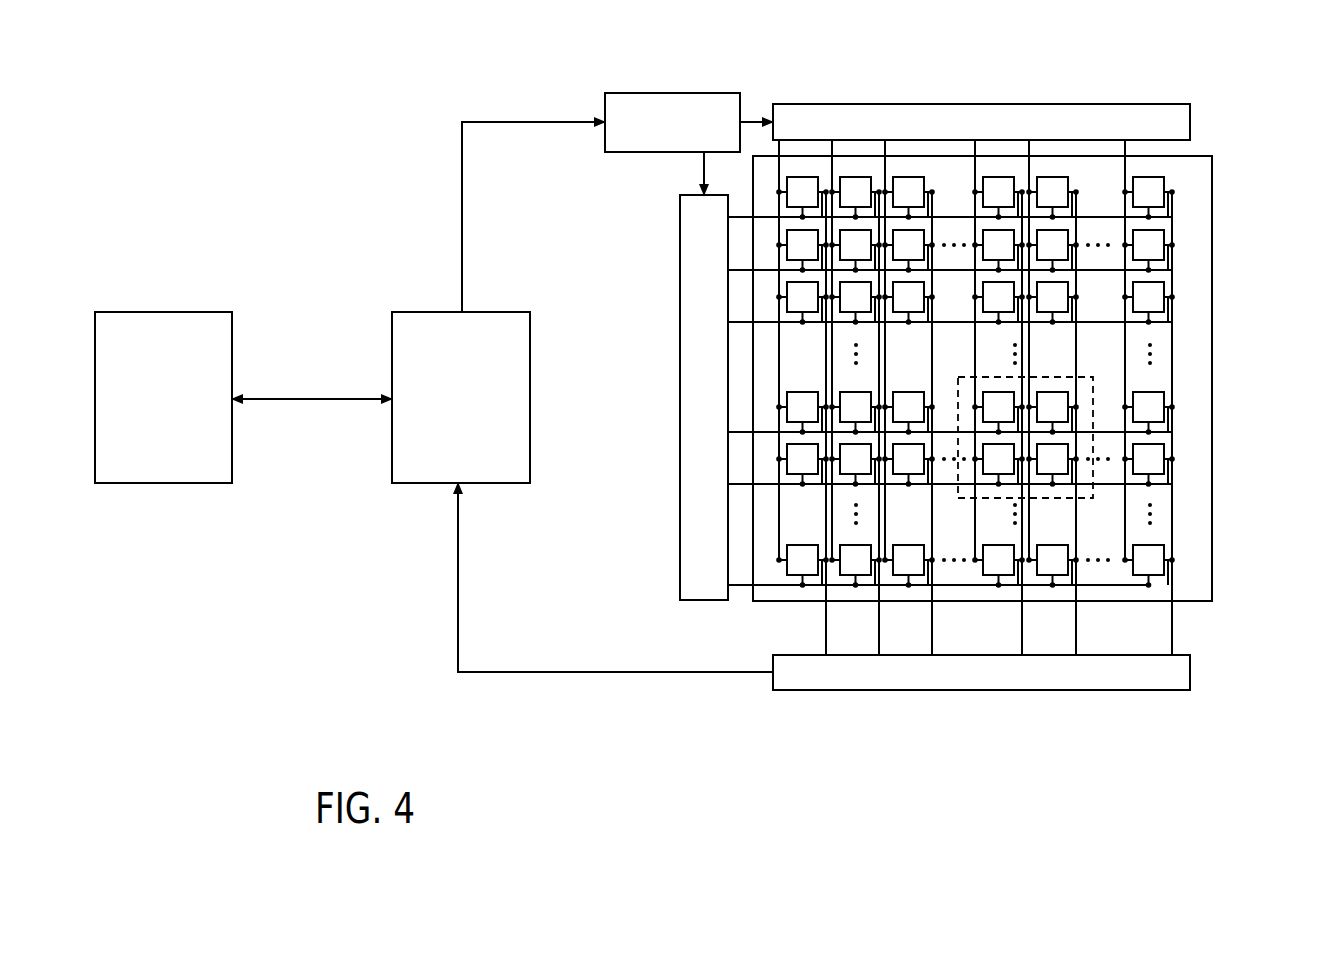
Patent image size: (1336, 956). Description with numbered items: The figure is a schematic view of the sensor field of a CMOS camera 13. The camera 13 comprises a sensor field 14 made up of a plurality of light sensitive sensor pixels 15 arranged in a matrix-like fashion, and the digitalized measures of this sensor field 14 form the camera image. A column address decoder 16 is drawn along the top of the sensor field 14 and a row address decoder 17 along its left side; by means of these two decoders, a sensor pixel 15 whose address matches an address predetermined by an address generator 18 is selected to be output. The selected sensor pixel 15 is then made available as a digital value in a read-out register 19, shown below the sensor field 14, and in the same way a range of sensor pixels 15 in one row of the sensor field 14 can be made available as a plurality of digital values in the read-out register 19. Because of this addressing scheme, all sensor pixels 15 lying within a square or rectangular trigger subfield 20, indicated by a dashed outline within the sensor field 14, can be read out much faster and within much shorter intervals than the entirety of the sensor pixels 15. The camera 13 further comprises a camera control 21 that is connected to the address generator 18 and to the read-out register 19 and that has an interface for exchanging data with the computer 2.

The computer 2 is at (153, 416).
The camera 13 is at (368, 94).
The sensor field 14 is at (1022, 397).
The sensor pixel 15 is at (1168, 302).
The column address decoder 16 is at (1178, 118).
The row address decoder 17 is at (680, 400).
The address generator 18 is at (656, 140).
The read-out register 19 is at (1177, 673).
The trigger subfield 20 is at (1095, 473).
The camera control 21 is at (444, 417).